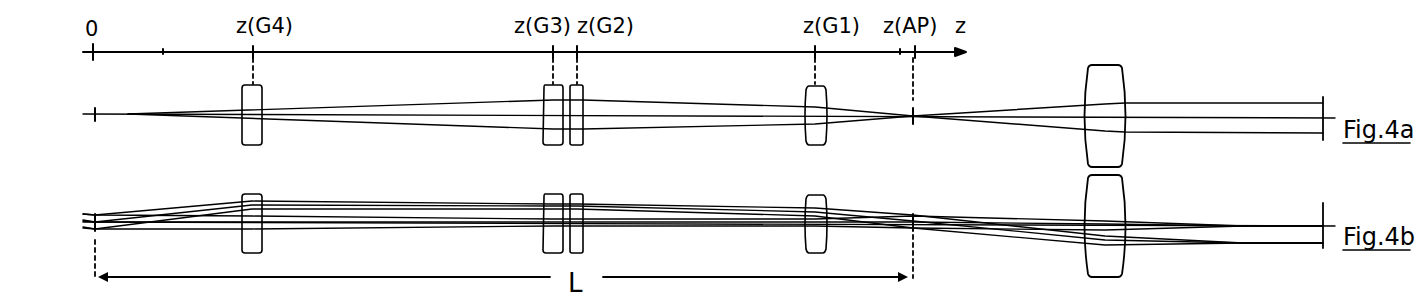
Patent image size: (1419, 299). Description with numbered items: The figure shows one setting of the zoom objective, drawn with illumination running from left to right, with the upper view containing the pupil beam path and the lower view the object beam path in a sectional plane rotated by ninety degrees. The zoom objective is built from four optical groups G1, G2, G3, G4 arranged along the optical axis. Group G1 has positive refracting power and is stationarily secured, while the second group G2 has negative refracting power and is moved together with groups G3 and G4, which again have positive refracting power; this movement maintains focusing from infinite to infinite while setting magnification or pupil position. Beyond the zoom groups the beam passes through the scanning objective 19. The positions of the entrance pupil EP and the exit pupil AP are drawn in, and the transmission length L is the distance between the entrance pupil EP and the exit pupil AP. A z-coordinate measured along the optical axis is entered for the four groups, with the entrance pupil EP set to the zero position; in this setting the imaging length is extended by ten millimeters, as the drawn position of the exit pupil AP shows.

In FIG. 4A, the scanning objective 19 is at (1122, 150).
In FIG. 4B, the scanning objective 19 is at (1125, 197).
In FIG. 4A, the first optical group G1 is at (815, 146).
In FIG. 4B, the first optical group G1 is at (823, 187).
In FIG. 4A, the second optical group G2 is at (582, 146).
In FIG. 4B, the second optical group G2 is at (600, 186).
In FIG. 4A, the third optical group G3 is at (545, 146).
In FIG. 4B, the third optical group G3 is at (528, 182).
In FIG. 4A, the fourth optical group G4 is at (253, 146).
In FIG. 4B, the fourth optical group G4 is at (272, 183).
In FIG. 4A, the entrance pupil EP is at (97, 136).
In FIG. 4B, the entrance pupil EP is at (95, 186).
In FIG. 4A, the exit pupil AP is at (913, 142).
In FIG. 4B, the exit pupil AP is at (913, 190).